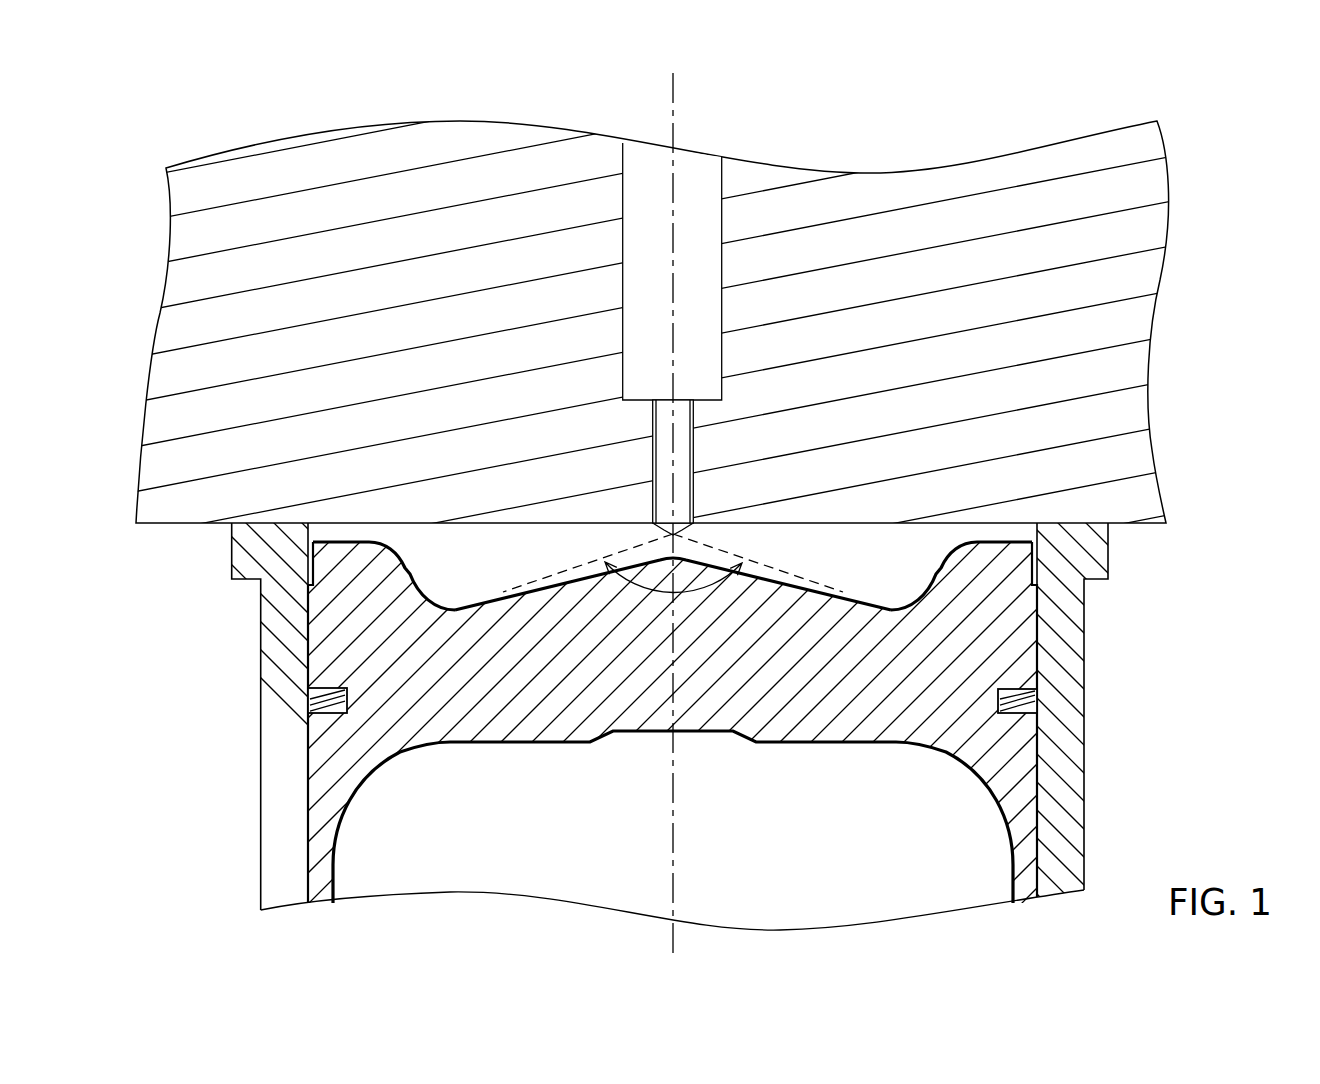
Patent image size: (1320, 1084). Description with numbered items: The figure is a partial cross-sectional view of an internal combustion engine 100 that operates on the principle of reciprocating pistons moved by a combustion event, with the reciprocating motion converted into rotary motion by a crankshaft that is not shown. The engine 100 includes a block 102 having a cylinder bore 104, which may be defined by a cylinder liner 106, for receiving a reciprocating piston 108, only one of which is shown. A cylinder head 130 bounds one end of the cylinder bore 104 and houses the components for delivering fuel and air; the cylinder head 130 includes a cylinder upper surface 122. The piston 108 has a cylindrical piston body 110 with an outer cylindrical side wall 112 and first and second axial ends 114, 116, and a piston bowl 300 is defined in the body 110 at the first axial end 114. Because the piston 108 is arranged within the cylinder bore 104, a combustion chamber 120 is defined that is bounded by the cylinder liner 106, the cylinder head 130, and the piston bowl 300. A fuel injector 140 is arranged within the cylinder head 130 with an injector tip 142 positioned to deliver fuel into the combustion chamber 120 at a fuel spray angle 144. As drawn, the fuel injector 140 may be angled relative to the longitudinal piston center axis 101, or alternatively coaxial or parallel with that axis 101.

The internal combustion engine 100 is at (838, 82).
The longitudinal piston center axis 101 is at (673, 107).
The block 102 is at (238, 676).
The cylinder bore 104 is at (913, 818).
The cylinder liner 106 is at (1062, 667).
The piston 108 is at (1007, 777).
The piston body 110 is at (413, 720).
The side wall 112 is at (1038, 727).
The first axial end 114 is at (509, 508).
The second axial end 116 is at (405, 914).
The combustion chamber 120 is at (830, 570).
The cylinder upper surface 122 is at (337, 525).
The cylinder head 130 is at (1013, 213).
The fuel injector 140 is at (702, 198).
The injector tip 142 is at (676, 534).
The fuel spray angle 144 is at (637, 587).
The piston bowl 300 is at (453, 583).